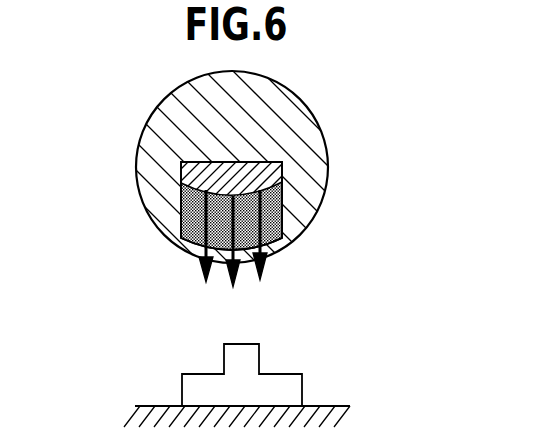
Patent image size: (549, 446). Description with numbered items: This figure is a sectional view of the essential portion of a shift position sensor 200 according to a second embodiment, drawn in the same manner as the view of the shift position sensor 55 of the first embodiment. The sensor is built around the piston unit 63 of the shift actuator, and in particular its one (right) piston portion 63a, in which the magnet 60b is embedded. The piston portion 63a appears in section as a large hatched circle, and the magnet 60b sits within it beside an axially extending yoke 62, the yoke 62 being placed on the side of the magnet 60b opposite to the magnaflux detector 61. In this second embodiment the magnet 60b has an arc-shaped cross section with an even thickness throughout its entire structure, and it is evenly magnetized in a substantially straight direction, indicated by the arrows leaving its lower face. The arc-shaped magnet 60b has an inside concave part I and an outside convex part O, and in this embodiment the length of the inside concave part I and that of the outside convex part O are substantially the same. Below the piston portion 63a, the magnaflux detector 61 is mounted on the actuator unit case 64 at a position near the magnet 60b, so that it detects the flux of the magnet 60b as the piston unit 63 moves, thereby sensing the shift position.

The shift position sensor 200 is at (400, 57).
The piston unit 63 is at (136, 165).
The piston portion 63a is at (321, 132).
The yoke 62 is at (192, 161).
The magnet 60b is at (275, 212).
The inside concave part I is at (240, 194).
The outside convex part O is at (268, 258).
The shift position sensor 55 is at (392, 290).
The magnaflux detector 61 is at (245, 356).
The actuator unit case 64 is at (323, 406).